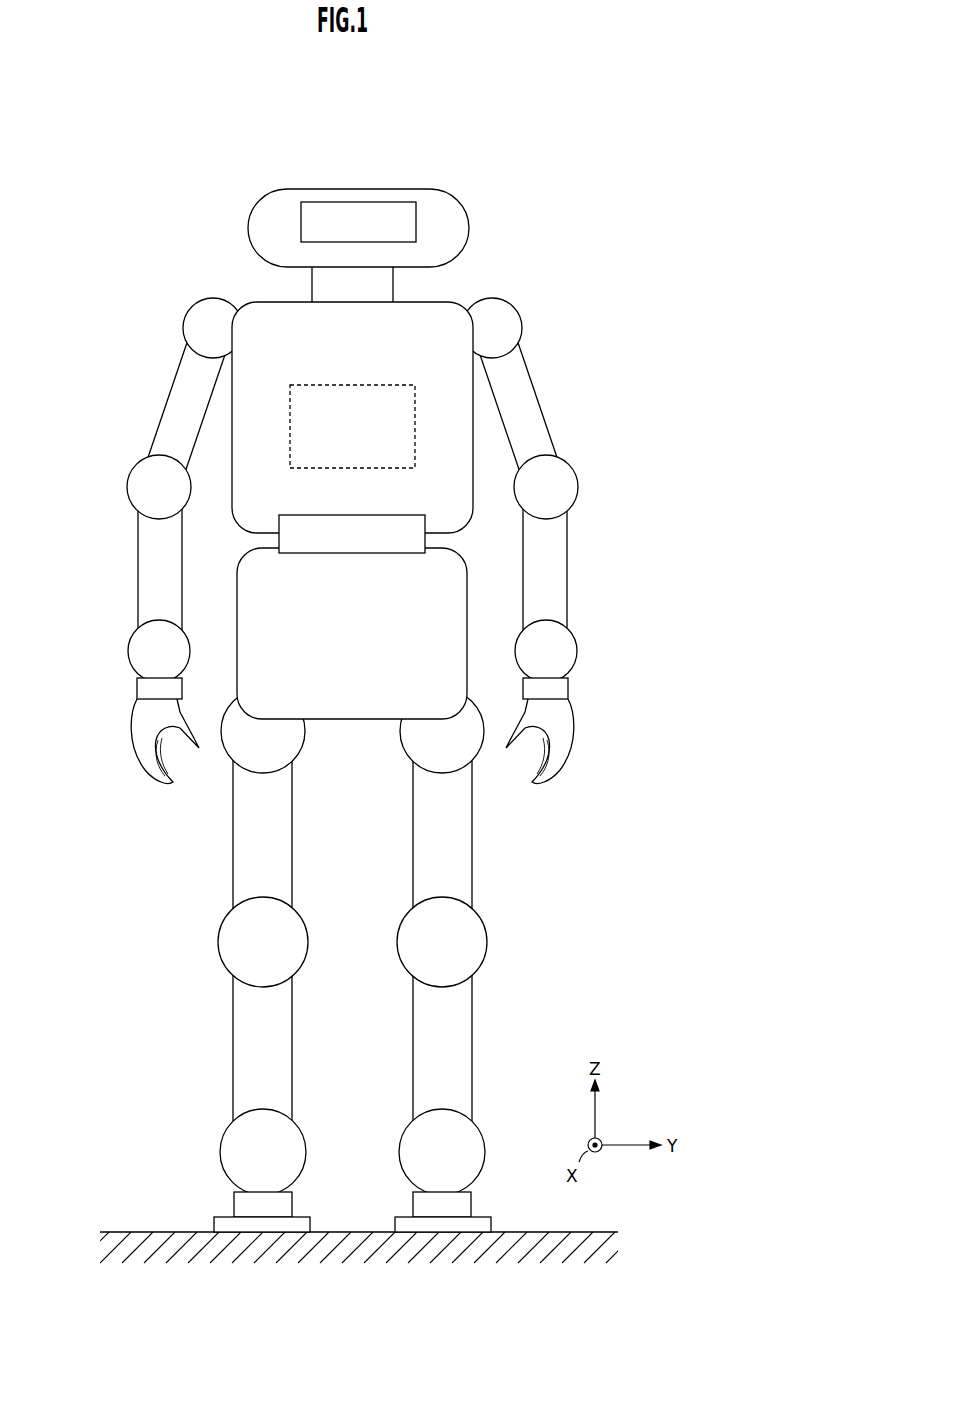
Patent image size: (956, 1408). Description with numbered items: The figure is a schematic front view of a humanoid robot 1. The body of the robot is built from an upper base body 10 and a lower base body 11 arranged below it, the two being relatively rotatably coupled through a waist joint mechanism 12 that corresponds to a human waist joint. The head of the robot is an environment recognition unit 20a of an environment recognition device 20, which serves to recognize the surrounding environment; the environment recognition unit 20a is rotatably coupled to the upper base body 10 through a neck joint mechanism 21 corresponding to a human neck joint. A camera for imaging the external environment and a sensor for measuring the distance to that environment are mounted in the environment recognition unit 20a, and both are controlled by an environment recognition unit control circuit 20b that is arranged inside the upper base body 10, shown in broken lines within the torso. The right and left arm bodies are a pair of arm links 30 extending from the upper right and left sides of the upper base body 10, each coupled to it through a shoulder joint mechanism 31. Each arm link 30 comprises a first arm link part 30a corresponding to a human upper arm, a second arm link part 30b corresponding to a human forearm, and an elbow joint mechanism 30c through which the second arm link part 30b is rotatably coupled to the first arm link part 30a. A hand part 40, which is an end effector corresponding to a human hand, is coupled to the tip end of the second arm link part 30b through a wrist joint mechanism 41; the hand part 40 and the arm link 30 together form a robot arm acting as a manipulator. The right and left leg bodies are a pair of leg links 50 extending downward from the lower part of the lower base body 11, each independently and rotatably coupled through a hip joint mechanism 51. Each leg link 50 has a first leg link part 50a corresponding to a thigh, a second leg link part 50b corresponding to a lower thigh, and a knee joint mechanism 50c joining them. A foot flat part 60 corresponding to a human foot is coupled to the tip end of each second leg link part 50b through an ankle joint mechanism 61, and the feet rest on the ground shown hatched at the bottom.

The robot 1 is at (552, 110).
The upper base body 10 is at (458, 480).
The lower base body 11 is at (442, 613).
The waist joint mechanism 12 is at (412, 542).
The environment recognition device 20 is at (390, 178).
The environment recognition unit 20a is at (453, 217).
The environment recognition unit control circuit 20b is at (360, 385).
The neck joint mechanism 21 is at (380, 288).
The arm link 30 is at (352, 486).
The first arm link part 30a is at (158, 408).
The second arm link part 30b is at (142, 545).
The elbow joint mechanism 30c is at (148, 487).
The shoulder joint mechanism 31 is at (200, 322).
The hand part 40 is at (133, 727).
The wrist joint mechanism 41 is at (150, 655).
The leg link 50 is at (349, 941).
The first leg link part 50a is at (240, 868).
The second leg link part 50b is at (238, 997).
The knee joint mechanism 50c is at (235, 948).
The hip joint mechanism 51 is at (236, 752).
The foot flat part 60 is at (215, 1216).
The ankle joint mechanism 61 is at (237, 1143).